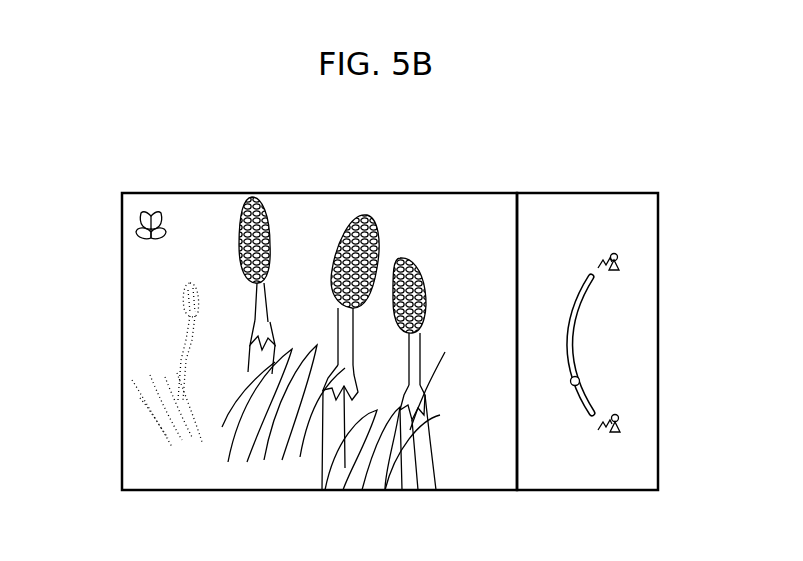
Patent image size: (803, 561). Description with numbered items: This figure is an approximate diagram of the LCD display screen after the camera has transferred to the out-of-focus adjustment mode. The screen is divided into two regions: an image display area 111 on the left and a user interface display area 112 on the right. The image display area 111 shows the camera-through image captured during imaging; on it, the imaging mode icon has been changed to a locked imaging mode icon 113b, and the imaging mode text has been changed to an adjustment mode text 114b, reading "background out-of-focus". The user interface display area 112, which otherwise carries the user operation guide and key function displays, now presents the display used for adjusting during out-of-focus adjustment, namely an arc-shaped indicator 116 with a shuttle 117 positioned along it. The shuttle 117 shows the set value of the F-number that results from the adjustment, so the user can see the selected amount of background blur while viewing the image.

The image display area 111 is at (333, 203).
The user interface display area 112 is at (615, 205).
The locked imaging mode icon 113b is at (148, 200).
The adjustment mode text 114b is at (120, 251).
The arc-shaped indicator 116 is at (574, 303).
The shuttle 117 is at (574, 386).